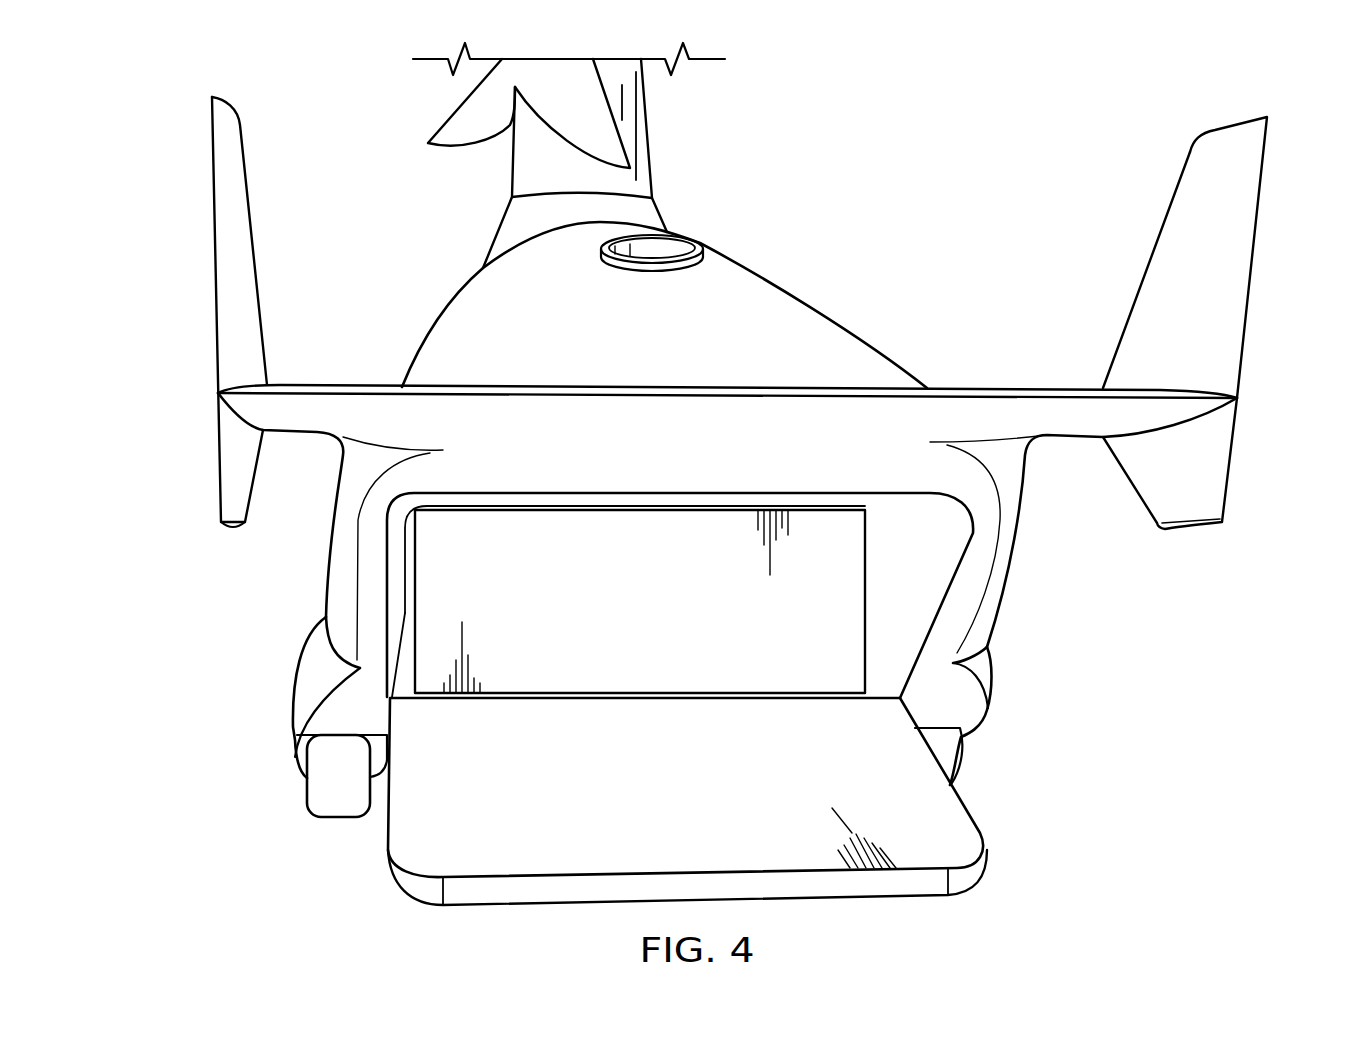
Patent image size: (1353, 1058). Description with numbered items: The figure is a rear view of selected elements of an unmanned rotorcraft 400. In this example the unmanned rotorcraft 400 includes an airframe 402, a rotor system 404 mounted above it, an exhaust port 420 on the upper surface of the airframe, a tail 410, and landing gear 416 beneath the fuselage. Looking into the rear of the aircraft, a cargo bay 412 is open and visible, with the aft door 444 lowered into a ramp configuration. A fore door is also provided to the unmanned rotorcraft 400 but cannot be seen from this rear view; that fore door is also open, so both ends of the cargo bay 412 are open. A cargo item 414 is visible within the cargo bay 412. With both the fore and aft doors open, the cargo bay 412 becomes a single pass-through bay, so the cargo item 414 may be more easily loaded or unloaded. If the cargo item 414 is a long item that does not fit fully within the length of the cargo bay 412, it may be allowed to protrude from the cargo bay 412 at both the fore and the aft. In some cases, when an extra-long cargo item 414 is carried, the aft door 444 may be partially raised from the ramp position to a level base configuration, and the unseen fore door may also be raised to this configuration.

The unmanned rotorcraft 400 is at (1022, 174).
The airframe 402 is at (810, 310).
The rotor system 404 is at (510, 168).
The tail 410 is at (212, 147).
The cargo bay 412 is at (943, 568).
The cargo item 414 is at (597, 680).
The landing gear 416 is at (333, 808).
The exhaust port 420 is at (700, 245).
The aft door 444 is at (960, 833).